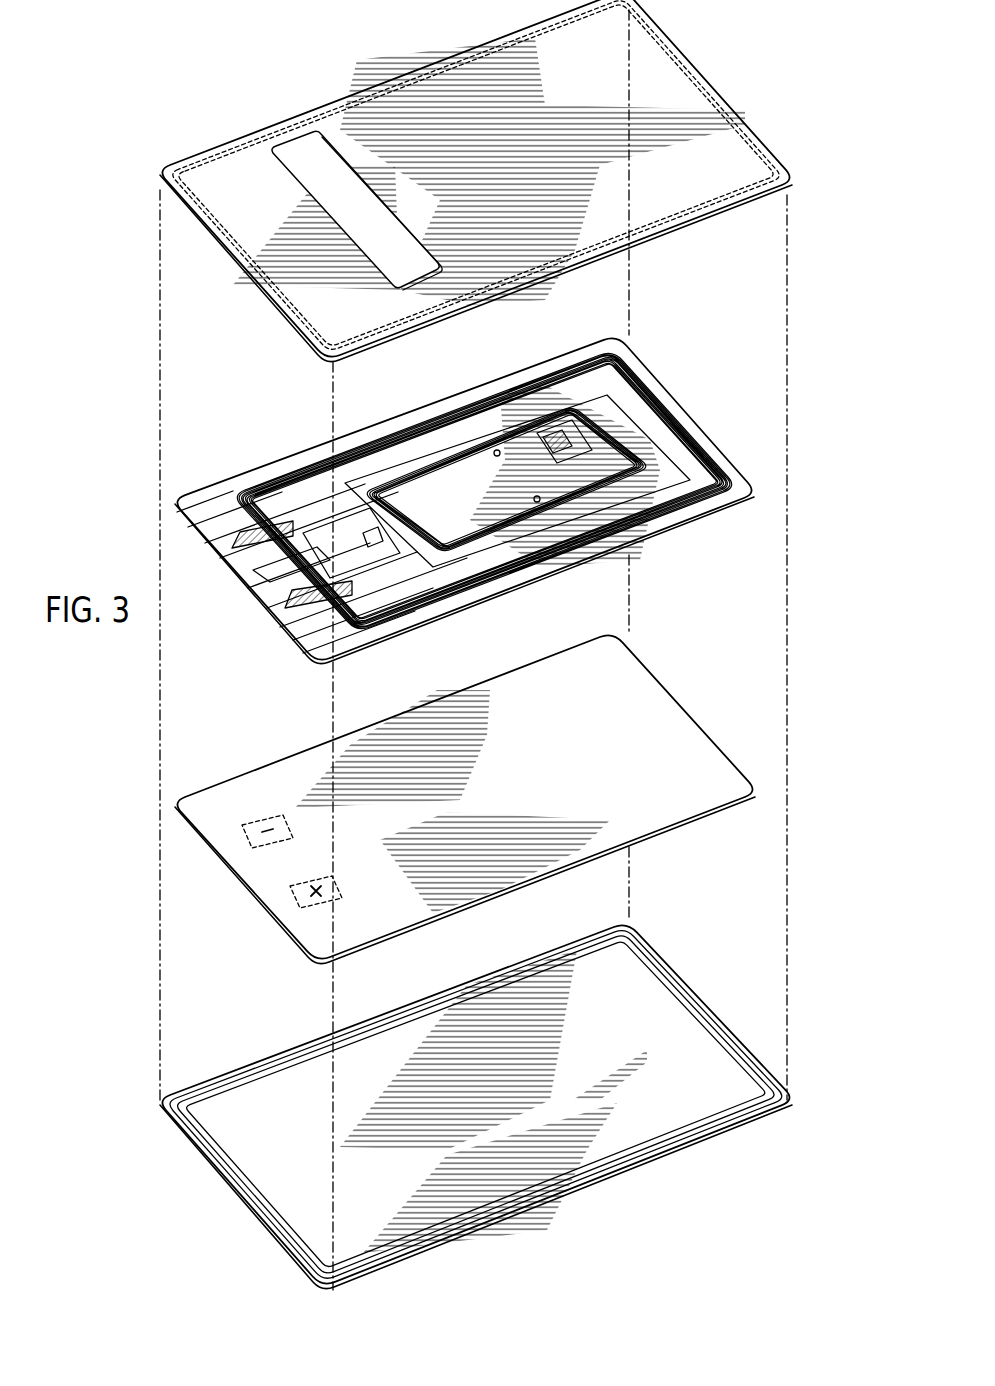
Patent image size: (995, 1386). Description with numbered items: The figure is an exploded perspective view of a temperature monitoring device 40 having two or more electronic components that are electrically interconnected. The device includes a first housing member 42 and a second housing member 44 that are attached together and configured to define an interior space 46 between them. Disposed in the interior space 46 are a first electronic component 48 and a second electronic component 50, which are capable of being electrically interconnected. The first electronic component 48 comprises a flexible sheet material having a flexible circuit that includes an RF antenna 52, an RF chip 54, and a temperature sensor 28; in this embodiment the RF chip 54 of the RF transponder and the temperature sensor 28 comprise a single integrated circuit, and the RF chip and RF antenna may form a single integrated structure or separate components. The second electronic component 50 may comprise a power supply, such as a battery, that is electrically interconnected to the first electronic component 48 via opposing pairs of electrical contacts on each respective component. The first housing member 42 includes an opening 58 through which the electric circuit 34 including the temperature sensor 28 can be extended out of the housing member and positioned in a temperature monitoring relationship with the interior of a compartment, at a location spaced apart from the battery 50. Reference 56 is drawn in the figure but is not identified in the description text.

The temperature monitoring device 40 is at (118, 316).
The first housing member 42 is at (672, 80).
The opening 58 is at (293, 150).
The first electronic component 48 is at (750, 495).
The RF antenna 52 is at (697, 452).
The RF chip 54 is at (575, 437).
The temperature sensor 28 is at (590, 440).
The electric circuit 34 is at (645, 475).
The display 56 is at (459, 572).
The second electronic component 50 is at (703, 765).
The second housing member 44 is at (797, 1108).
The interior space 46 is at (752, 933).